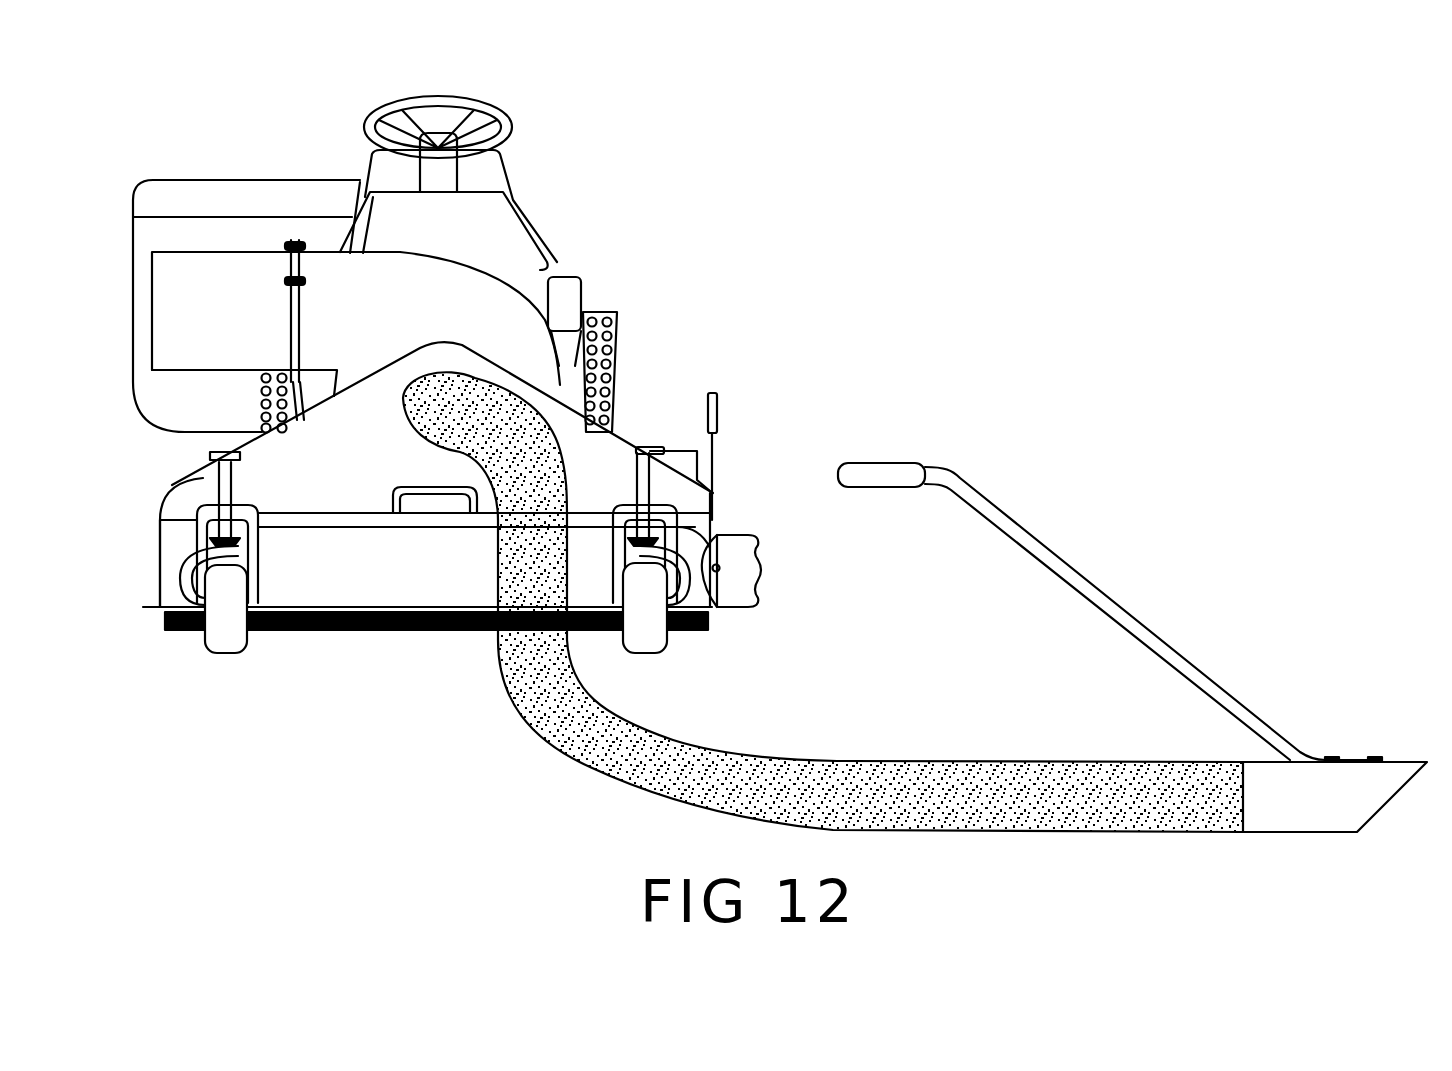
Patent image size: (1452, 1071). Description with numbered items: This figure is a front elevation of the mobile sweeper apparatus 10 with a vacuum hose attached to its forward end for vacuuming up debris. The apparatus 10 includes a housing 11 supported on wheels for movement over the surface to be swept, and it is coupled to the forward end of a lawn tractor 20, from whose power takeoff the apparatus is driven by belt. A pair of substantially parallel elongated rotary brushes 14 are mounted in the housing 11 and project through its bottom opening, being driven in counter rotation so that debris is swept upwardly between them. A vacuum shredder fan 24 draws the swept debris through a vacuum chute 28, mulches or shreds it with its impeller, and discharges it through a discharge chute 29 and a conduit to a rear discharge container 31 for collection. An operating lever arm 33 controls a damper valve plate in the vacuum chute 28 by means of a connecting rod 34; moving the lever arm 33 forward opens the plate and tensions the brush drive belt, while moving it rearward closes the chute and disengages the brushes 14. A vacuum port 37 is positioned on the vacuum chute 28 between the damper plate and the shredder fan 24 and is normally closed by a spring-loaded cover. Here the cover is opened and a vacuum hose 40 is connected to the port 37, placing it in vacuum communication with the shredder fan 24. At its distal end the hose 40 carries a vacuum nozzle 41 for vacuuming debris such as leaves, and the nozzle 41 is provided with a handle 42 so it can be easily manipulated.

The mobile sweeper apparatus 10 is at (752, 287).
The housing 11 is at (206, 494).
The rotary brushes 14 is at (453, 640).
The lawn tractor 20 is at (507, 228).
The vacuum shredder fan 24 is at (482, 316).
The vacuum chute 28 is at (312, 487).
The discharge chute 29 is at (237, 316).
The rear discharge container 31 is at (214, 232).
The operating lever arm 33 is at (713, 392).
The connecting rod 34 is at (692, 450).
The vacuum port 37 is at (400, 417).
The vacuum hose 40 is at (560, 725).
The vacuum nozzle 41 is at (1358, 788).
The handle 42 is at (1020, 542).